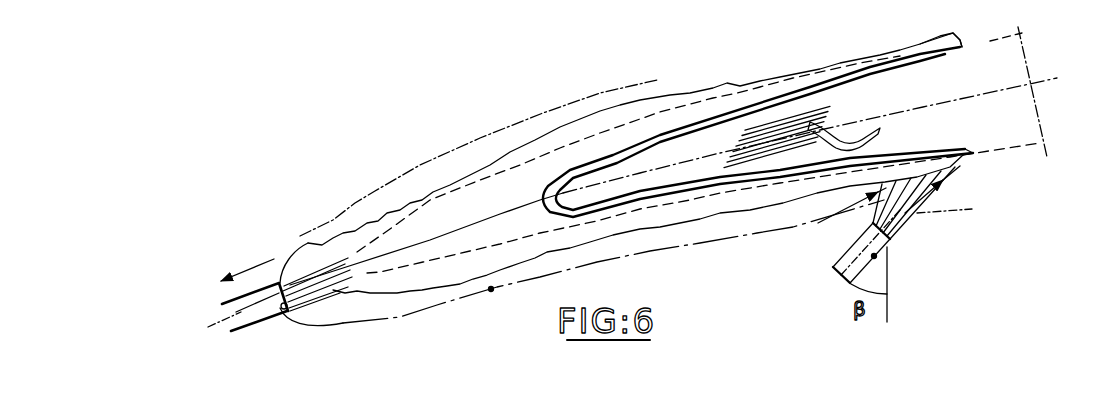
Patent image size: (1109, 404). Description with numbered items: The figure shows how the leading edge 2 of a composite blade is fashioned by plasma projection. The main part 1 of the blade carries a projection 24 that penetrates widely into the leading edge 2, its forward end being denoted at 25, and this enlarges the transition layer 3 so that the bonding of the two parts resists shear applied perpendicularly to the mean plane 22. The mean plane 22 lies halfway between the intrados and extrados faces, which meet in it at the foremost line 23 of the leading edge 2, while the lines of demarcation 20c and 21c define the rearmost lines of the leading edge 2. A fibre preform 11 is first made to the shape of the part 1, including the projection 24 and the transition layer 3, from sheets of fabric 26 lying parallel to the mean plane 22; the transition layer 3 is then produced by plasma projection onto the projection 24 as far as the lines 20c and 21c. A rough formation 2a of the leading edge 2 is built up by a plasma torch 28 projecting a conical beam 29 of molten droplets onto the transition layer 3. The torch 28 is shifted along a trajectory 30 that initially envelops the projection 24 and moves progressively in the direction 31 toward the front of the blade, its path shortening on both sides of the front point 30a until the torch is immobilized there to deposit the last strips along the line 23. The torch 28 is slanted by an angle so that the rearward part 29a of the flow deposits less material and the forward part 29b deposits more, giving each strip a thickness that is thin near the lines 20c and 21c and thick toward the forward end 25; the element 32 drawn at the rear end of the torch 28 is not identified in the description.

The part 1 is at (978, 42).
The leading edge part 2 is at (418, 202).
The rough formation 2a is at (562, 120).
The transition layer 3 is at (672, 128).
The fibre preform 11 is at (779, 128).
The line of demarcation 20c is at (973, 153).
The line of demarcation 21c is at (947, 33).
The mean plane 22 is at (953, 100).
The foremost line 23 is at (292, 260).
The projection 24 is at (729, 126).
The forward end of the projection 25 is at (541, 200).
The sheets of fabric 26 is at (862, 136).
The plasma torch 28 is at (876, 257).
The conical beam 29 is at (892, 229).
The part of the flow toward the rear 29a is at (962, 157).
The part of the flow toward the front 29b is at (819, 223).
The trajectory 30 is at (491, 290).
The front of the trajectory 30a is at (285, 310).
The direction 31 is at (246, 271).
The tube end 32 is at (840, 285).